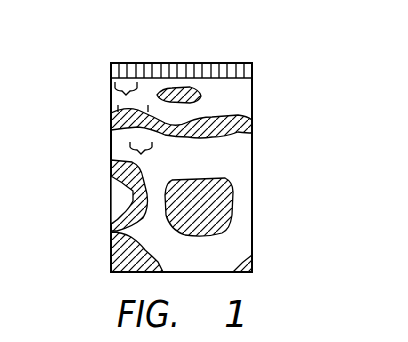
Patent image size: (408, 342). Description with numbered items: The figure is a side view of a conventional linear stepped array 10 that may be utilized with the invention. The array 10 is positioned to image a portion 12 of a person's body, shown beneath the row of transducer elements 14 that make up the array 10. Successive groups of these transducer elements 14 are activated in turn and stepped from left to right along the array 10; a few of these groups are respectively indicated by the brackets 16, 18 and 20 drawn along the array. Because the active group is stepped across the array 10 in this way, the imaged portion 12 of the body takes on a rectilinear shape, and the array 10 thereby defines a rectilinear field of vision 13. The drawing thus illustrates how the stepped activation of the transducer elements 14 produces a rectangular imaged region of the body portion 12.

The linear stepped array 10 is at (255, 48).
The portion of a person's body 12 is at (225, 155).
The rectilinear field of vision 13 is at (111, 192).
The transducer elements 14 is at (129, 68).
The bracket 16 is at (123, 92).
The bracket 18 is at (125, 124).
The bracket 20 is at (137, 151).